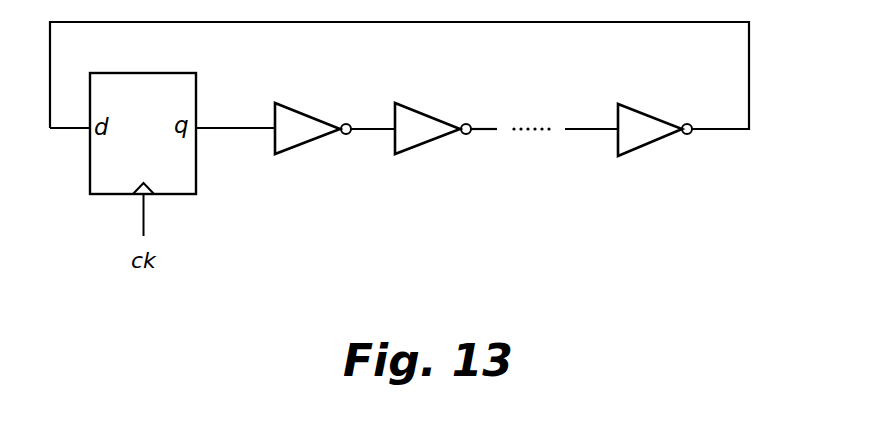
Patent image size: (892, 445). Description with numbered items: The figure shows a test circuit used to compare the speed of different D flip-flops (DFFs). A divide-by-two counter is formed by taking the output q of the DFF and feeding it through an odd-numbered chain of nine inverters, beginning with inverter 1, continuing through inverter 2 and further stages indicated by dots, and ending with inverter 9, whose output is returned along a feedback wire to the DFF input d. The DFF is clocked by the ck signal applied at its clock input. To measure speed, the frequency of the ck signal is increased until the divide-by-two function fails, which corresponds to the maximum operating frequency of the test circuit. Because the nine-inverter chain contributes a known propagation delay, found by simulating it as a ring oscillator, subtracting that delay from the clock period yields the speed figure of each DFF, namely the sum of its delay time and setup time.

The inverter 1 is at (313, 140).
The inverter 2 is at (433, 140).
The inverter 9 is at (655, 140).